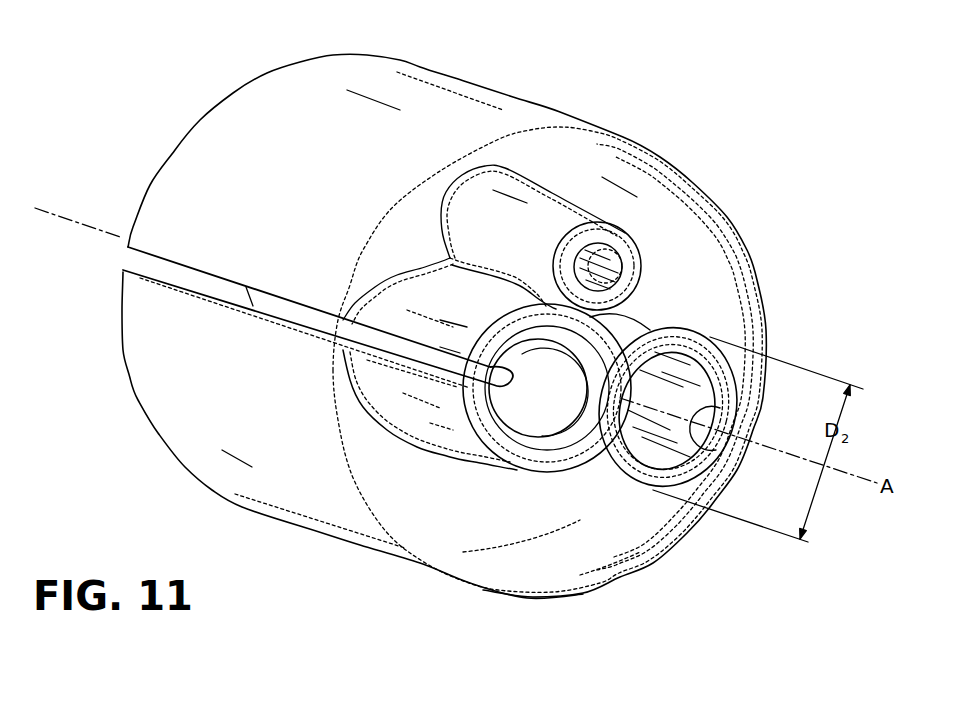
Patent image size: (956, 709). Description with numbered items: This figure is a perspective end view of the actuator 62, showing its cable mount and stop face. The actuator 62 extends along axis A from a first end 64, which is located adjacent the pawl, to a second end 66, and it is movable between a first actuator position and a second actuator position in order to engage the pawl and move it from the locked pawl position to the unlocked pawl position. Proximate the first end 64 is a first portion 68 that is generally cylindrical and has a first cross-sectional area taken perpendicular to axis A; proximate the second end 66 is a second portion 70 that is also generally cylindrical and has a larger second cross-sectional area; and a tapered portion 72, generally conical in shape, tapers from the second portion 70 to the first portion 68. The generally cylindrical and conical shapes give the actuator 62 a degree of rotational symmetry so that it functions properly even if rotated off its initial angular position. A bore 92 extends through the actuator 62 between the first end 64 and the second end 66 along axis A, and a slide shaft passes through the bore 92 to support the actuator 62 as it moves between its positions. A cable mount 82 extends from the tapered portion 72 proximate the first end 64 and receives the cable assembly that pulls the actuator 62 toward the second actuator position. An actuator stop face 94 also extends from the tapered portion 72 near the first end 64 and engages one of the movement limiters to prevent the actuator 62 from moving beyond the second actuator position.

The actuator 62 is at (147, 142).
The first end 64 is at (743, 387).
The second end 66 is at (120, 343).
The first portion 68 is at (657, 317).
The second portion 70 is at (330, 533).
The tapered portion 72 is at (667, 213).
The cable mount 82 is at (502, 385).
The bore 92 is at (720, 408).
The actuator stop face 94 is at (612, 235).